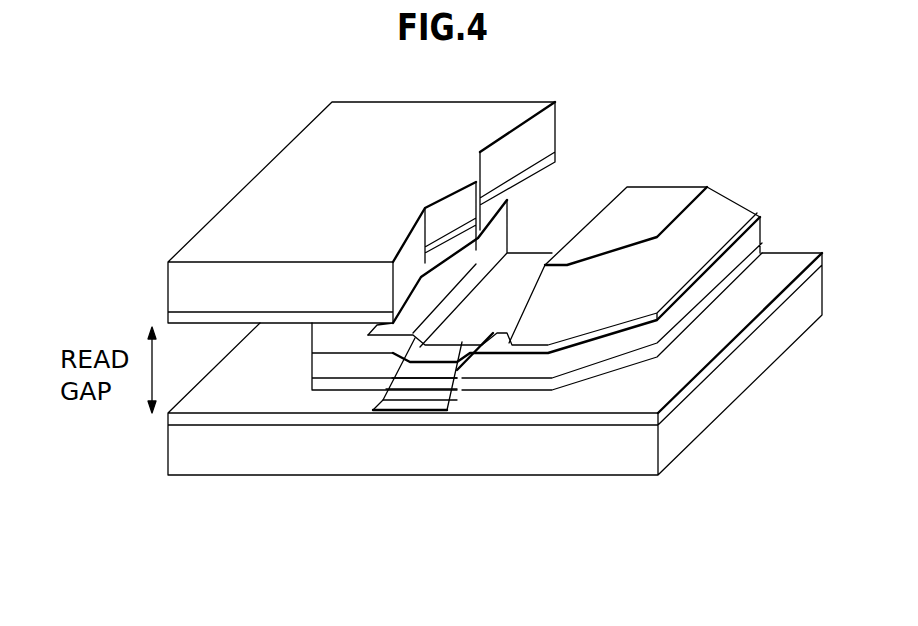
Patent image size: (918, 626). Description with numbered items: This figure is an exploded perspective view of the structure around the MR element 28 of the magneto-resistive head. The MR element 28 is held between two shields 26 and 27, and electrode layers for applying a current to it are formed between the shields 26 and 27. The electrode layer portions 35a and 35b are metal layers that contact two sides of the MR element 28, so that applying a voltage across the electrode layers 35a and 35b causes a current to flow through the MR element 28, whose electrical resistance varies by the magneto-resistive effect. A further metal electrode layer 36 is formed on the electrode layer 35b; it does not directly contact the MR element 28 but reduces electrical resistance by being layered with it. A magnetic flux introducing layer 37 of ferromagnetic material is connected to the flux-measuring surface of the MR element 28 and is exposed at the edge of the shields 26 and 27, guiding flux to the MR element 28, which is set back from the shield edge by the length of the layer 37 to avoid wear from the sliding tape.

The shield 26 is at (195, 467).
The shield 27 is at (175, 287).
The MR element 28 is at (453, 408).
The electrode layer 35a is at (762, 237).
The electrode layer 35b is at (317, 370).
The electrode layer 36 is at (645, 192).
The magnetic flux introducing layer 37 is at (407, 415).